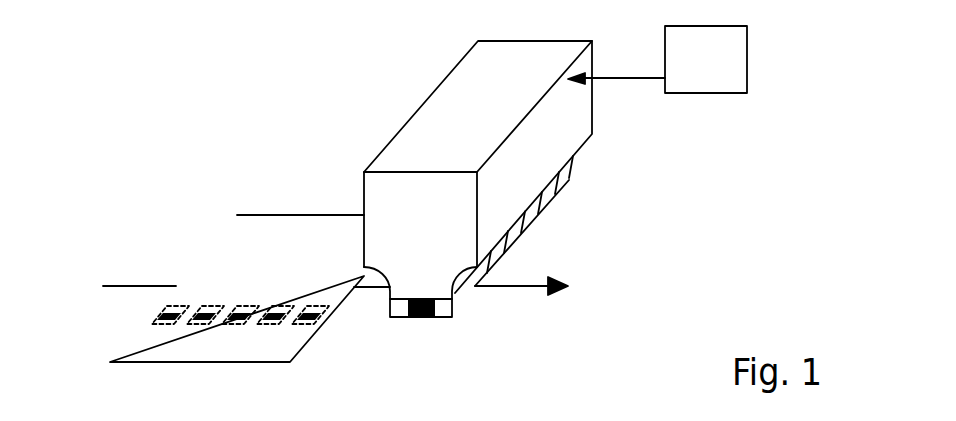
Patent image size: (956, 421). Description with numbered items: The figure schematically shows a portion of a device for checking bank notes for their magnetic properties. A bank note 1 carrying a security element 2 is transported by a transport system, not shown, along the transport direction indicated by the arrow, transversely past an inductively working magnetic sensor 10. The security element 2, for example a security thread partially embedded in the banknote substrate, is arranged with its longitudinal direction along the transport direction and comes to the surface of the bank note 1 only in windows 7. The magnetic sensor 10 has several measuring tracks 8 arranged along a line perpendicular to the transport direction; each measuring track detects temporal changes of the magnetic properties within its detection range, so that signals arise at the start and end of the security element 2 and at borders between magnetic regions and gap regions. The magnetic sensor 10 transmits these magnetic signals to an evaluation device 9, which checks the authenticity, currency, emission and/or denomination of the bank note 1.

The bank note 1 is at (228, 226).
The security element 2 is at (267, 308).
The windows 7 is at (312, 307).
The measuring tracks 8 is at (457, 300).
The evaluation device 9 is at (665, 46).
The magnetic sensor 10 is at (435, 107).